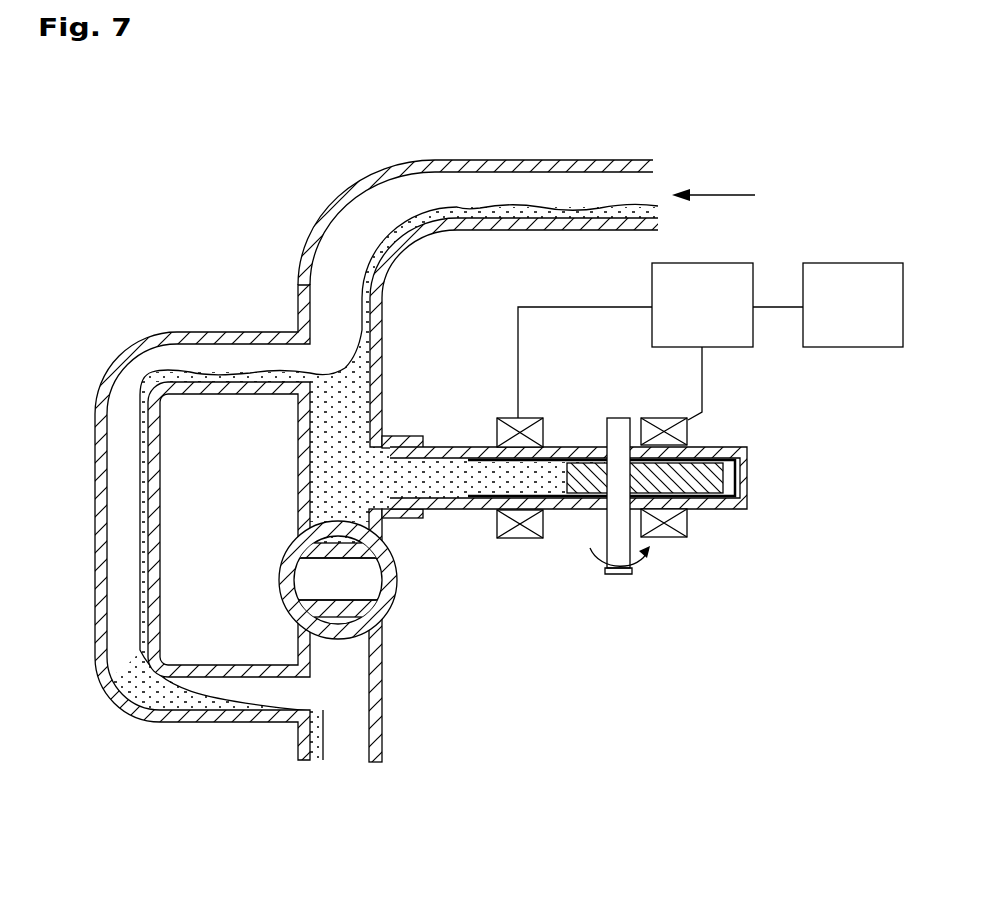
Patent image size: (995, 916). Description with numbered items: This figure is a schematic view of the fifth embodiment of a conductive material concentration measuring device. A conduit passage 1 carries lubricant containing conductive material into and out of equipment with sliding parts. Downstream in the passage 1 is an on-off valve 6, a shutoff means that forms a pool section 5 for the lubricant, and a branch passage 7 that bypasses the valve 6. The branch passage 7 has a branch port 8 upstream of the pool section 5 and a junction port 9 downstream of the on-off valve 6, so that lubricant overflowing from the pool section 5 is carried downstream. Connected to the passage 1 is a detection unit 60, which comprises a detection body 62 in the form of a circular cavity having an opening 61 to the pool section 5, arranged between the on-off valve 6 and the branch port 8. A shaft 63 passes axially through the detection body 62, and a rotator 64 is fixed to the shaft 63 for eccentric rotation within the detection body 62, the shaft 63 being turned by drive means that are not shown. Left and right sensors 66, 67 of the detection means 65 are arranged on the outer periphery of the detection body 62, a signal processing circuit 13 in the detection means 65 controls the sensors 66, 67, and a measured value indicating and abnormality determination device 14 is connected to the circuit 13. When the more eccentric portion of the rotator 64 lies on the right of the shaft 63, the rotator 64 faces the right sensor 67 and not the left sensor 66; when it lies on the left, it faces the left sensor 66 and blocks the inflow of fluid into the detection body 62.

The conduit passage 1 is at (309, 216).
The pool section 5 is at (350, 478).
The on-off valve 6 is at (394, 600).
The branch passage 7 is at (96, 620).
The branch port 8 is at (311, 363).
The junction port 9 is at (308, 688).
The signal processing circuit 13 is at (737, 278).
The measured value indicating and abnormality determination device 14 is at (853, 273).
The detection unit 60 is at (614, 513).
The opening 61 is at (393, 522).
The detection body 62 is at (573, 512).
The shaft 63 is at (617, 543).
The rotator 64 is at (712, 480).
The detection means 65 is at (661, 555).
The left sensor 66 is at (498, 415).
The right sensor 67 is at (645, 418).